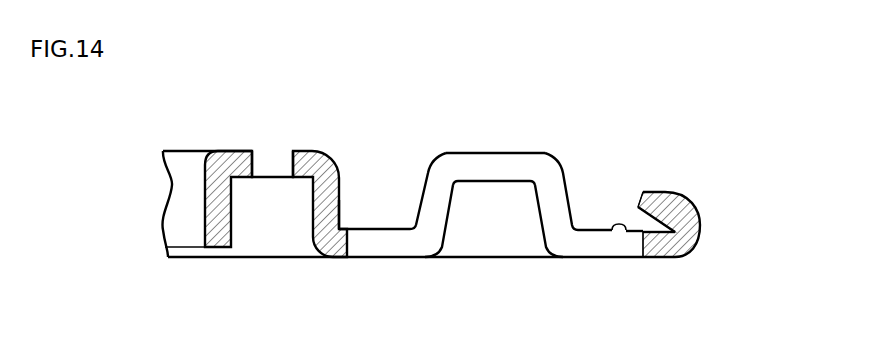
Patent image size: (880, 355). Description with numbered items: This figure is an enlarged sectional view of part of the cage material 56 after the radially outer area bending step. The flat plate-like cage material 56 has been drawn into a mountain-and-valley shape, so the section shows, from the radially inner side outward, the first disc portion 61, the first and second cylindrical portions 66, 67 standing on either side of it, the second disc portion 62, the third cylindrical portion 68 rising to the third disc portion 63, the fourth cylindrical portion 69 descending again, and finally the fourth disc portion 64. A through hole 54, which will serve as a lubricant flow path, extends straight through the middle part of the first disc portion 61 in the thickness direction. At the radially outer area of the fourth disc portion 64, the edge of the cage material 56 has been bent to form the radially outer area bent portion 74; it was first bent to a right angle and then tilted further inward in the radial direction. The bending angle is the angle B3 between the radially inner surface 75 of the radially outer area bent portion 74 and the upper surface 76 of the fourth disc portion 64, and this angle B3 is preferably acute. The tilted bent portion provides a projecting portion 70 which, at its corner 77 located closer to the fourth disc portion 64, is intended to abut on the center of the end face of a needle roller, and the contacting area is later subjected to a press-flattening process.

The cage material 56 is at (679, 117).
The through hole 54 is at (268, 163).
The first disc portion 61 is at (302, 162).
The first cylindrical portion 66 is at (215, 220).
The second cylindrical portion 67 is at (330, 198).
The second disc portion 62 is at (375, 245).
The third cylindrical portion 68 is at (437, 200).
The third disc portion 63 is at (493, 168).
The fourth cylindrical portion 69 is at (552, 202).
The fourth disc portion 64 is at (593, 242).
The radially inner surface 75 is at (632, 215).
The upper surface 76 is at (613, 228).
The corner 77 is at (638, 208).
The projecting portion 70 is at (638, 197).
The radially outer area bent portion 74 is at (660, 200).
The angle B3 is at (632, 224).